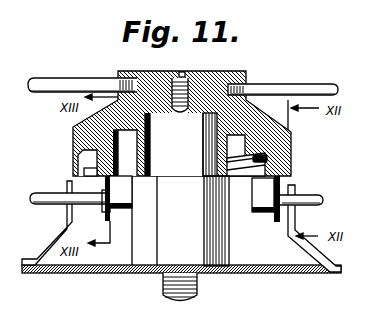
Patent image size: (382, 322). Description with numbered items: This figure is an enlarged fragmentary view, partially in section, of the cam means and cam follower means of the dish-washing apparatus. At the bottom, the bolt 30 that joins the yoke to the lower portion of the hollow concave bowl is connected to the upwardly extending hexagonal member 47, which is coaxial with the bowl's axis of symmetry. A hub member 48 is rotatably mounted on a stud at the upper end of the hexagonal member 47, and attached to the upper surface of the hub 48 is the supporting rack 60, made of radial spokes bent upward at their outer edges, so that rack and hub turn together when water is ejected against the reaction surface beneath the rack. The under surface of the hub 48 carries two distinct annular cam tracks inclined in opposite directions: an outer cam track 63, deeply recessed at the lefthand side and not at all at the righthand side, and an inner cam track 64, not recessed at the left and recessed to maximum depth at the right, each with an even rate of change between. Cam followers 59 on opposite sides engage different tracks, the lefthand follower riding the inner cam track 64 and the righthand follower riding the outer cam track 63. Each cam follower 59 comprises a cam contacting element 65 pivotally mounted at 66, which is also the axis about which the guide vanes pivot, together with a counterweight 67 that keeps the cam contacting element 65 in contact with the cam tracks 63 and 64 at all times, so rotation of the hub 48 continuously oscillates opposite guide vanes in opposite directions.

The hub member 48 is at (225, 82).
The supporting rack 60 is at (318, 84).
The hexagonal member 47 is at (218, 252).
The bolt 30 is at (173, 283).
The cam follower 59 is at (100, 211).
The pivot 66 is at (33, 195).
The counterweight 67 is at (120, 189).
The cam contacting element 65 is at (112, 218).
The outer cam track 63 is at (80, 157).
The inner cam track 64 is at (80, 176).